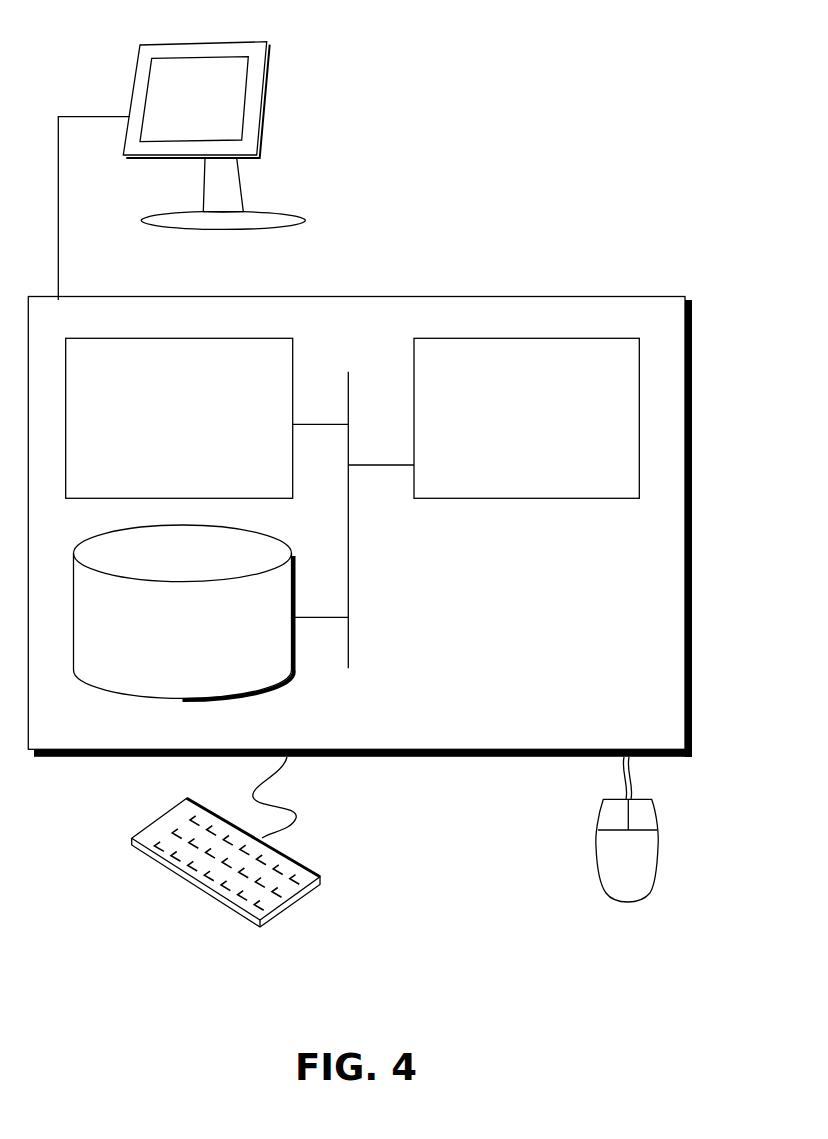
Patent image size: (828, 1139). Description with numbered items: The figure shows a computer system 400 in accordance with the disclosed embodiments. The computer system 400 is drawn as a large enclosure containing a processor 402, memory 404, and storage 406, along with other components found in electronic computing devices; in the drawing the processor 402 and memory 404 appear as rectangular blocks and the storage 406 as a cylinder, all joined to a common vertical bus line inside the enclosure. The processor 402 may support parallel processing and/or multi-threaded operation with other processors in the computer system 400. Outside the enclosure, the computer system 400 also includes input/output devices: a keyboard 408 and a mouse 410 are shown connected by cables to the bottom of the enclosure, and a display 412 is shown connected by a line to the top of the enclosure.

The computer system 400 is at (403, 273).
The processor 402 is at (508, 430).
The memory 404 is at (158, 430).
The storage 406 is at (165, 640).
The keyboard 408 is at (148, 860).
The mouse 410 is at (649, 870).
The display 412 is at (181, 171).